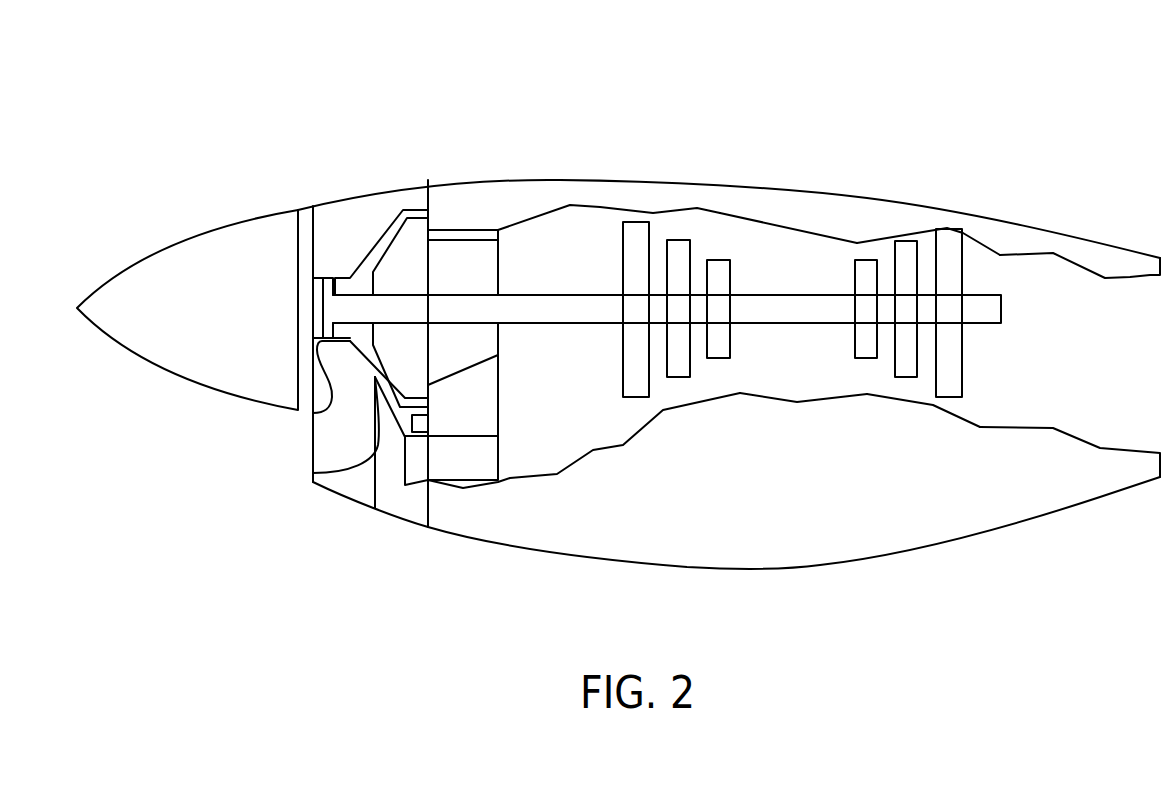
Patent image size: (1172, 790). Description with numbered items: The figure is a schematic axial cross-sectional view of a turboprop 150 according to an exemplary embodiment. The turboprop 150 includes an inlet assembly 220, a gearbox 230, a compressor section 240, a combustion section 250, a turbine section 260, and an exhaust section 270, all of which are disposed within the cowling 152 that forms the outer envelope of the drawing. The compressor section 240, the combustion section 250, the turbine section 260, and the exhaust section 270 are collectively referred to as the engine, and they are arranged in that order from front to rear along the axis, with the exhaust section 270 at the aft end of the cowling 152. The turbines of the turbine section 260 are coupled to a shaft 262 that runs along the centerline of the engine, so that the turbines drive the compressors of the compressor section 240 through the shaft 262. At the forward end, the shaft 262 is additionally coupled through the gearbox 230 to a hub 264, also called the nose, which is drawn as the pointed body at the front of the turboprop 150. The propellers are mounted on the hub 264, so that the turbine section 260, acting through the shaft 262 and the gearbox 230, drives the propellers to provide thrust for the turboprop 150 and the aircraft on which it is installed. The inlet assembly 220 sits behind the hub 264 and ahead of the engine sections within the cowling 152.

The turboprop 150 is at (226, 121).
The cowling 152 is at (592, 560).
The inlet assembly 220 is at (344, 510).
The gearbox 230 is at (338, 276).
The compressor section 240 is at (658, 240).
The combustion section 250 is at (792, 255).
The turbine section 260 is at (927, 240).
The shaft 262 is at (547, 292).
The hub 264 is at (181, 240).
The exhaust section 270 is at (1065, 275).